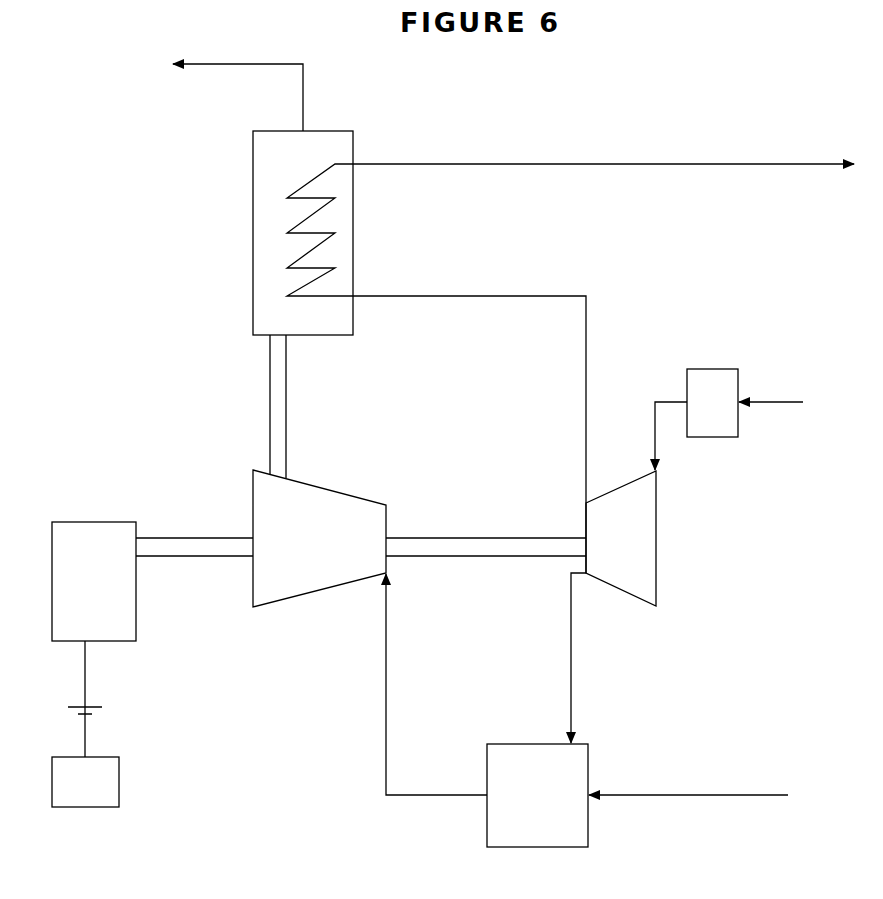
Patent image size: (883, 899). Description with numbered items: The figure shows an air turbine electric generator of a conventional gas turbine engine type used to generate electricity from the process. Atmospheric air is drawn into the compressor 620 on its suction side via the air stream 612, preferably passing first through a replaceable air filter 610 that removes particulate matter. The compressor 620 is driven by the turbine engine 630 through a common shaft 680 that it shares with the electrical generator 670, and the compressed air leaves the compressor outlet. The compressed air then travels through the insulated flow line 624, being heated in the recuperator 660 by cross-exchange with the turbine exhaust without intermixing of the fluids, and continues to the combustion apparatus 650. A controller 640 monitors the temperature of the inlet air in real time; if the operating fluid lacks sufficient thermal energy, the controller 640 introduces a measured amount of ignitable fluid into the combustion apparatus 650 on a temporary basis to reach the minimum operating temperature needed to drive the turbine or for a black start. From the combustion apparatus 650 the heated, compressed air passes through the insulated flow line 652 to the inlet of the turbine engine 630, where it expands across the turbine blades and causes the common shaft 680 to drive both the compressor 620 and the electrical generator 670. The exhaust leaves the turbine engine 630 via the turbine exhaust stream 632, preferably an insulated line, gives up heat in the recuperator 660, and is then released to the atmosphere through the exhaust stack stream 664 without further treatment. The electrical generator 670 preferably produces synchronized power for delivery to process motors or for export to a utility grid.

The replaceable air filter 610 is at (705, 439).
The air stream 612 is at (753, 399).
The compressor 620 is at (616, 556).
The insulated flow line 624 is at (521, 298).
The turbine engine 630 is at (334, 490).
The turbine exhaust stream 632 is at (268, 370).
The controller 640 is at (121, 760).
The combustion apparatus 650 is at (552, 741).
The insulated flow line 652 is at (389, 608).
The recuperator 660 is at (251, 177).
The exhaust stack stream 664 is at (220, 69).
The electrical generator 670 is at (123, 520).
The common shaft 680 is at (228, 536).